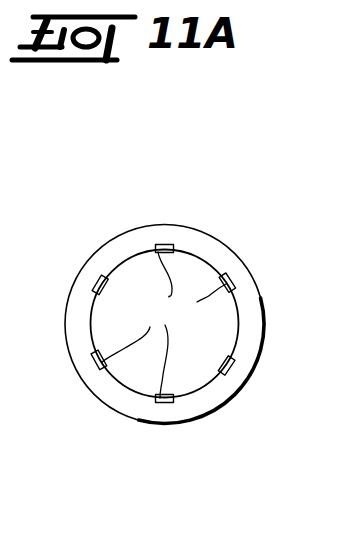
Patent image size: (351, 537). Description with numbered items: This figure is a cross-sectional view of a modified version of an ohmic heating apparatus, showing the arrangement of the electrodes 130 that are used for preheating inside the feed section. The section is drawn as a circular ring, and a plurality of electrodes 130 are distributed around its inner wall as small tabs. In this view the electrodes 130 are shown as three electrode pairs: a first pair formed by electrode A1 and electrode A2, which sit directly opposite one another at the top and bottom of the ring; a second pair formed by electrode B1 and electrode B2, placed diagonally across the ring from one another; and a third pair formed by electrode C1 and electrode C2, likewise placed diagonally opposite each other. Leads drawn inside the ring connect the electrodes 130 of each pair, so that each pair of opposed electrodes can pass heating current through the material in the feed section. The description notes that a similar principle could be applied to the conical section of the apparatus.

The electrodes 130 is at (164, 324).
The electrode A1 is at (162, 244).
The electrode A2 is at (160, 406).
The electrode B1 is at (235, 285).
The electrode B2 is at (93, 363).
The electrode C1 is at (232, 368).
The electrode C2 is at (96, 284).